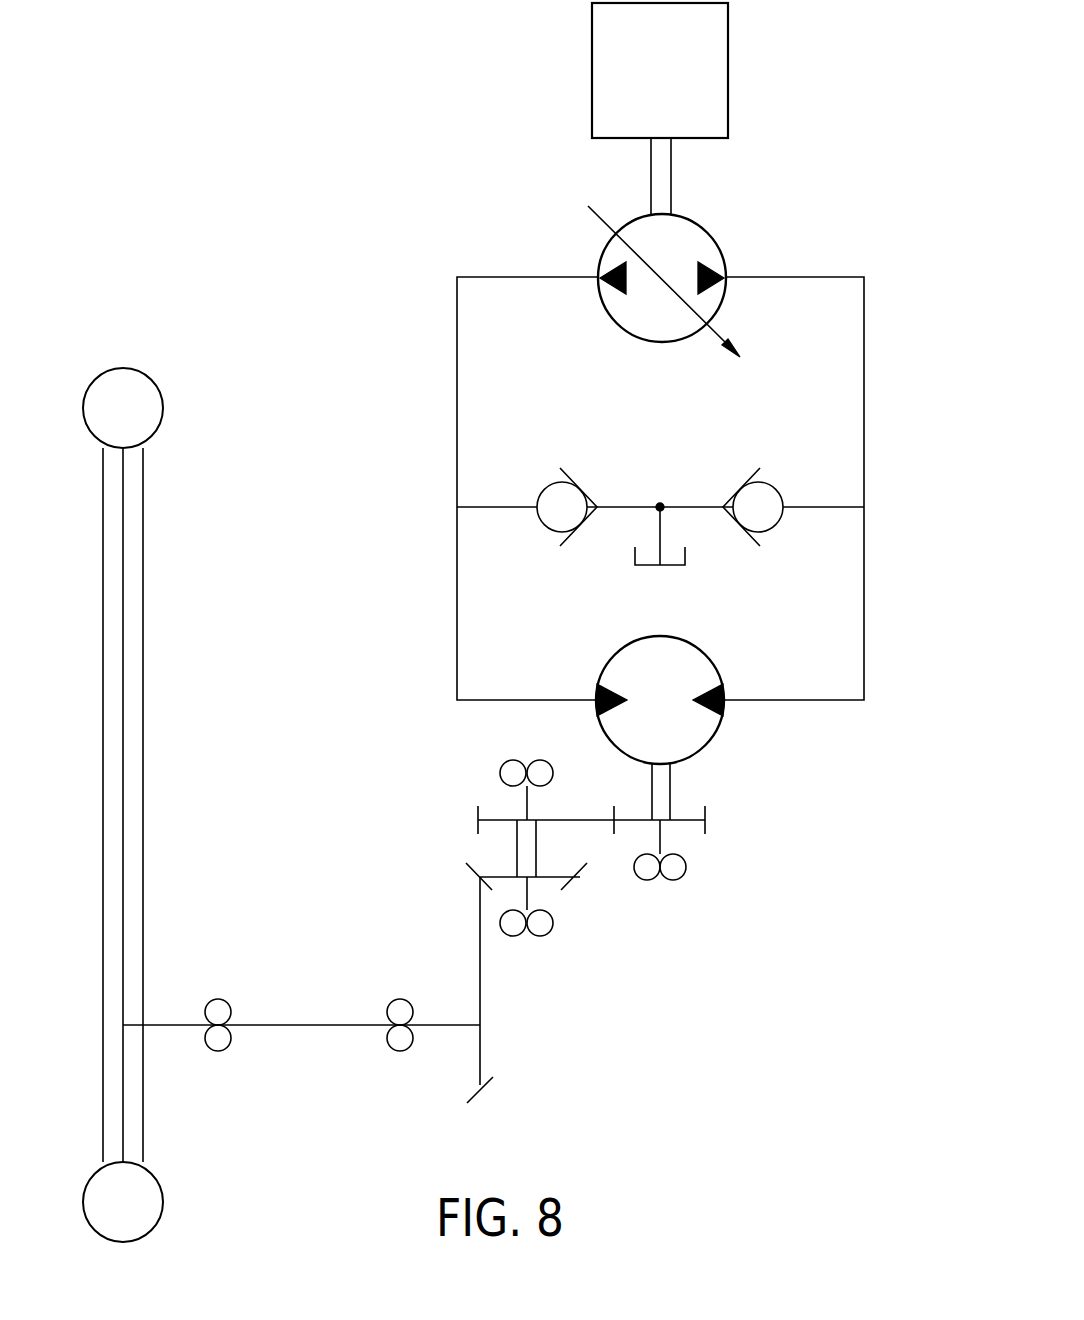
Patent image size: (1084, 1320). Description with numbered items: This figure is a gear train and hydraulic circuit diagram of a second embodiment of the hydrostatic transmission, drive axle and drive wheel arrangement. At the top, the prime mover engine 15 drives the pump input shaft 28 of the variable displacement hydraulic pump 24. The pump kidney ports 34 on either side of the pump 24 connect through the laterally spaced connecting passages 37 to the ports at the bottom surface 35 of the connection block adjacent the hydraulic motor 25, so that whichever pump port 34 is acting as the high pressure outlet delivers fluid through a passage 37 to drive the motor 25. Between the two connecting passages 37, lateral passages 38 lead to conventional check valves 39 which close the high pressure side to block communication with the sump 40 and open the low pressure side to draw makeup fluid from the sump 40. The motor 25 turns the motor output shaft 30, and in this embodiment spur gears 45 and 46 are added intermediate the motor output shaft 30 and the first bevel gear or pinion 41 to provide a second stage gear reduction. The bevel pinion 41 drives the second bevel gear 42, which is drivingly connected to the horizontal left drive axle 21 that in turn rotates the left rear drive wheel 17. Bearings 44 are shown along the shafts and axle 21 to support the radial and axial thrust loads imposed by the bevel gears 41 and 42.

The prime mover engine 15 is at (728, 80).
The pump input shaft 28 is at (650, 180).
The hydraulic pump 24 is at (700, 222).
The pump kidney ports 34 is at (598, 279).
The connecting passages 37 is at (457, 390).
The lateral passages 38 is at (504, 507).
The check valves 39 is at (572, 470).
The sump 40 is at (636, 572).
The hydraulic motor 25 is at (697, 643).
The bottom surface 35 is at (598, 702).
The motor output shaft 30 is at (672, 773).
The spur gear 45 is at (706, 820).
The bearings 44 is at (513, 760).
The spur gear 46 is at (478, 812).
The first bevel gear or pinion 41 is at (582, 880).
The second bevel gear 42 is at (488, 1095).
The left drive axle 21 is at (290, 1025).
The left rear drive wheel 17 is at (120, 368).